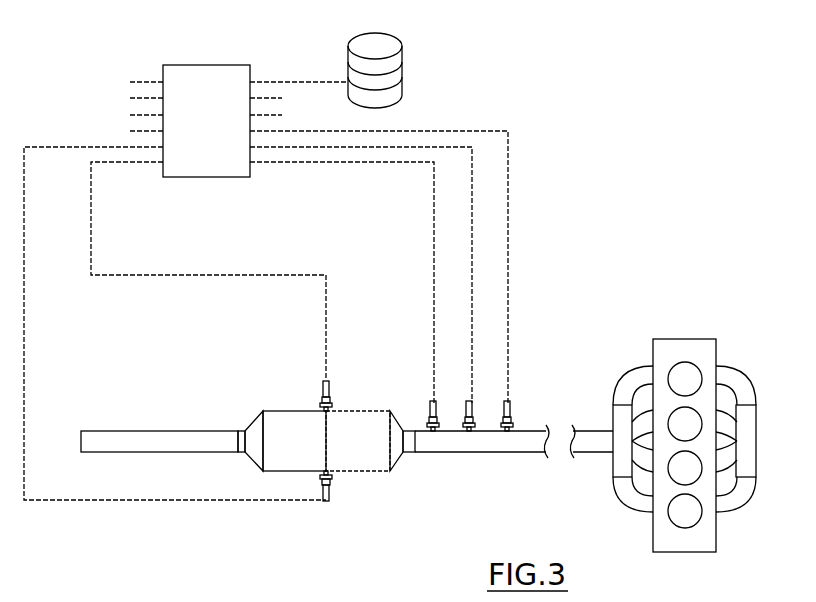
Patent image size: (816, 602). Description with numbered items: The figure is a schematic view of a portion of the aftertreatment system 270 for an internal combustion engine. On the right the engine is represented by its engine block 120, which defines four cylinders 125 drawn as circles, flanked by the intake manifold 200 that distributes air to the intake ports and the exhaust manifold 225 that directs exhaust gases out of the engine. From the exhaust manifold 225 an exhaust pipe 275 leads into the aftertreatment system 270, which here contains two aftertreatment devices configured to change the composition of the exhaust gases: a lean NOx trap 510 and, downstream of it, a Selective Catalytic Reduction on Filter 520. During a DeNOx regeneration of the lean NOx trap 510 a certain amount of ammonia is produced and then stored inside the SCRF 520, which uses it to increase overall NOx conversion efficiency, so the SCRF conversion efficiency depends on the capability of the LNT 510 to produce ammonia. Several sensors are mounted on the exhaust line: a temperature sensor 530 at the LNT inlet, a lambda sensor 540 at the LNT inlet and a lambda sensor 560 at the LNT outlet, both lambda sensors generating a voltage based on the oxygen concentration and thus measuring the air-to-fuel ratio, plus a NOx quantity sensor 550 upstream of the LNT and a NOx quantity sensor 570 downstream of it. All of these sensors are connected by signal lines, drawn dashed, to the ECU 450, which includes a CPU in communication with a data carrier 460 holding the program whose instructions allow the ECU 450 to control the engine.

The engine block 120 is at (696, 414).
The cylinder 125 is at (702, 513).
The intake manifold 200 is at (757, 430).
The exhaust manifold 225 is at (612, 468).
The aftertreatment system 270 is at (335, 455).
The exhaust pipe 275 is at (104, 452).
The ECU 450 is at (190, 131).
The data carrier 460 is at (402, 62).
The lean NOx trap 510 is at (372, 411).
The Selective Catalytic Reduction on Filter 520 is at (300, 471).
The temperature sensor 530 is at (433, 403).
The lambda sensor 540 is at (470, 402).
The NOx quantity sensor 550 is at (508, 402).
The lambda sensor 560 is at (322, 396).
The NOx quantity sensor 570 is at (332, 487).